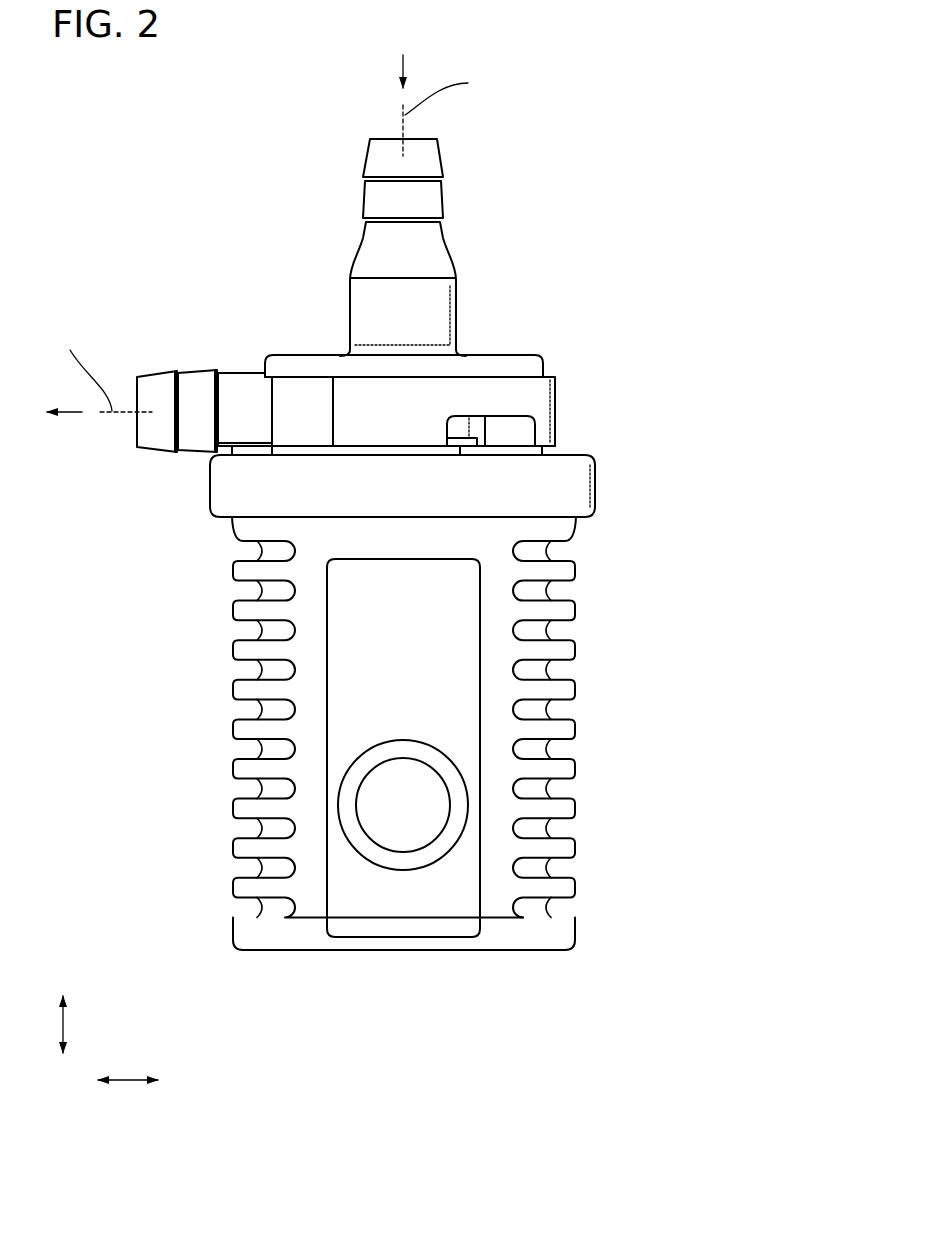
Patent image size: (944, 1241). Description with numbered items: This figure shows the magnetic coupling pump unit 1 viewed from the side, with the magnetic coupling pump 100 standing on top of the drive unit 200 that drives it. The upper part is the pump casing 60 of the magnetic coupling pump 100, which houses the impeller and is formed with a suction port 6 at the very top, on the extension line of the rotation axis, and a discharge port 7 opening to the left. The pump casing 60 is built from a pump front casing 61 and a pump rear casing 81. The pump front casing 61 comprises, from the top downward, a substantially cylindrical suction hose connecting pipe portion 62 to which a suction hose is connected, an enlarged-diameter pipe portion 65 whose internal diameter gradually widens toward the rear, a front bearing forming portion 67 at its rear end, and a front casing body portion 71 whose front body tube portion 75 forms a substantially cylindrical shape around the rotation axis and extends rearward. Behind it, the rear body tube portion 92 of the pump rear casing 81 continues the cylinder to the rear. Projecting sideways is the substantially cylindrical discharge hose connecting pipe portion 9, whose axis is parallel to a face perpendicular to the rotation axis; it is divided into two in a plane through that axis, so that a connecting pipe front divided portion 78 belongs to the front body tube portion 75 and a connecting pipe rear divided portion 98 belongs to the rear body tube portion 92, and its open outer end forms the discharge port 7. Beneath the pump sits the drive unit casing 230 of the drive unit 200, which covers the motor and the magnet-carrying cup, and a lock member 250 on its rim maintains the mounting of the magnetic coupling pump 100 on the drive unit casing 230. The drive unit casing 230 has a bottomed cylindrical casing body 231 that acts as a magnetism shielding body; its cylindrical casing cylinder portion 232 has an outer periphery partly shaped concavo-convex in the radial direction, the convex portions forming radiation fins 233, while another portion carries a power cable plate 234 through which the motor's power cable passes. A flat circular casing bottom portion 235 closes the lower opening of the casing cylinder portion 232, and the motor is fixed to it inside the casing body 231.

The magnetic coupling pump unit 1 is at (607, 327).
The suction port 6 is at (383, 137).
The discharge port 7 is at (137, 428).
The discharge hose connecting pipe portion 9 is at (217, 273).
The pump casing 60 is at (499, 210).
The pump front casing 61 is at (588, 120).
The suction hose connecting pipe portion 62 is at (439, 160).
The enlarged-diameter pipe portion 65 is at (448, 243).
The front bearing forming portion 67 is at (460, 303).
The front casing body portion 71 is at (507, 352).
The front body tube portion 75 is at (310, 366).
The connecting pipe front divided portion 78 is at (155, 384).
The pump rear casing 81 is at (307, 453).
The rear body tube portion 92 is at (340, 498).
The connecting pipe rear divided portion 98 is at (170, 437).
The magnetic coupling pump 100 is at (332, 217).
The drive unit 200 is at (570, 966).
The drive unit casing 230 is at (598, 493).
The casing body 231 is at (125, 868).
The casing cylinder portion 232 is at (240, 887).
The radiation fins 233 is at (243, 730).
The power cable plate 234 is at (457, 668).
The casing bottom portion 235 is at (303, 943).
The lock member 250 is at (527, 436).